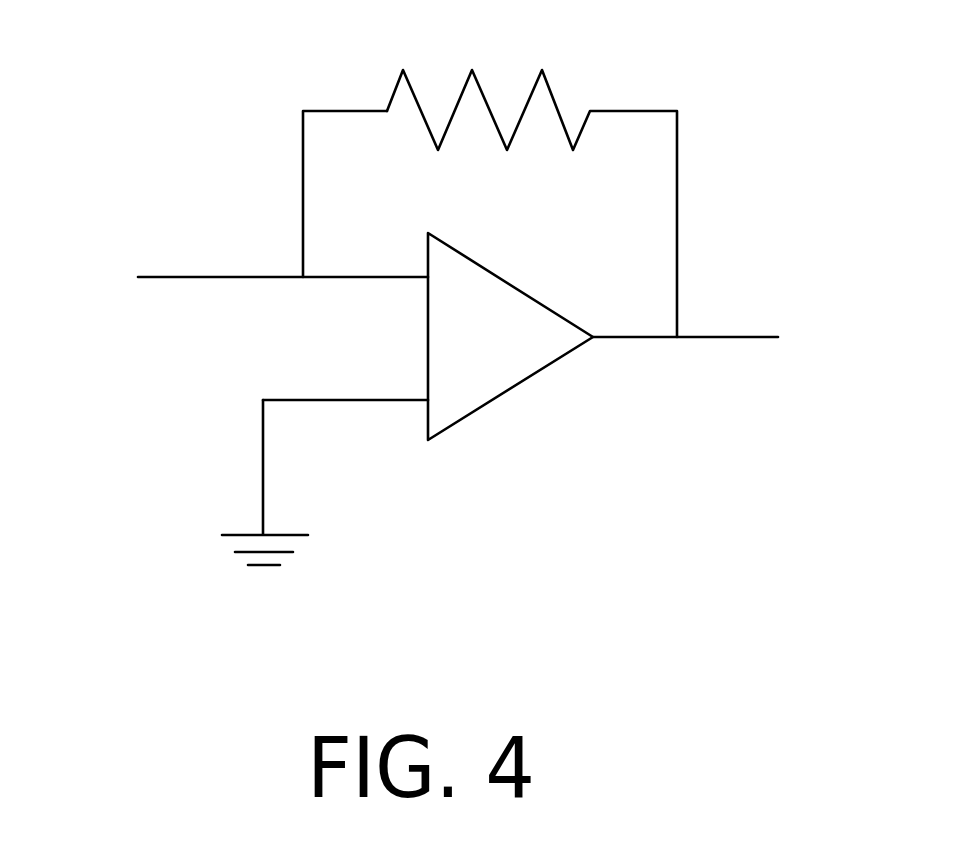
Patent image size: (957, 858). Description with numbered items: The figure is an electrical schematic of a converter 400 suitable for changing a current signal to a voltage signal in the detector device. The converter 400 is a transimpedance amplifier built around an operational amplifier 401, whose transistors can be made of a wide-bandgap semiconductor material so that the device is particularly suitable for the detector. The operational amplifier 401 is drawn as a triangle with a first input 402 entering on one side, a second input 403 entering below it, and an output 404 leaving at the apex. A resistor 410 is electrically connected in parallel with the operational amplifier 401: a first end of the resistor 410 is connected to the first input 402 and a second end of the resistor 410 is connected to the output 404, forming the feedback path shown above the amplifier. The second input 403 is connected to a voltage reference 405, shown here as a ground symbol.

The converter 400 is at (455, 295).
The operational amplifier 401 is at (492, 402).
The first input 402 is at (252, 277).
The second input 403 is at (303, 400).
The output 404 is at (657, 337).
The voltage reference 405 is at (263, 530).
The resistor 410 is at (552, 100).